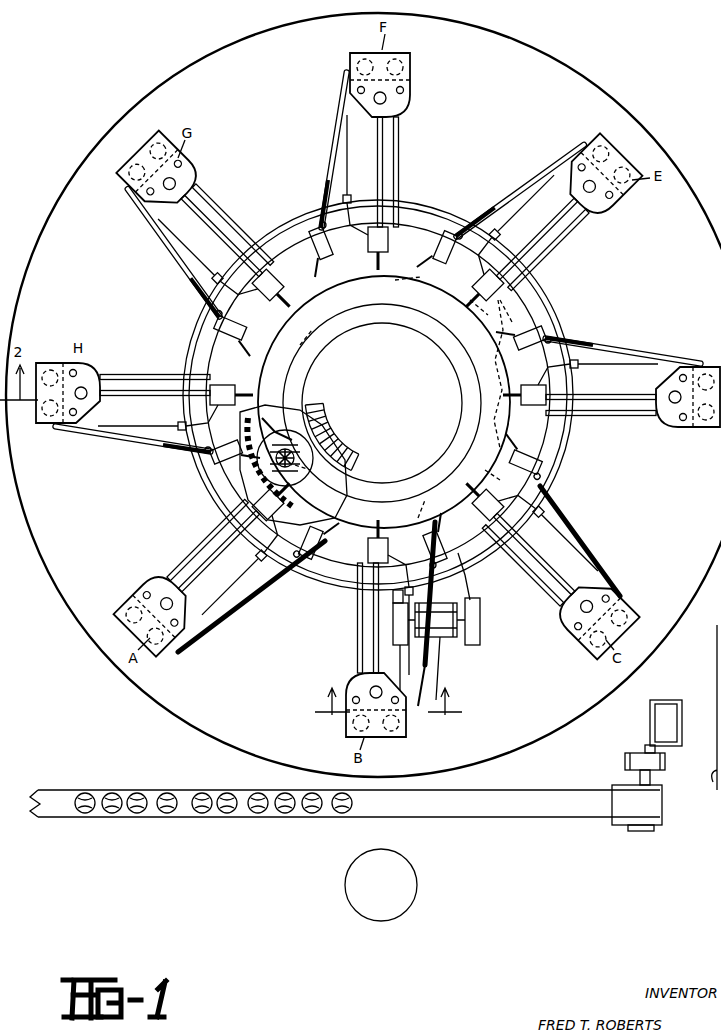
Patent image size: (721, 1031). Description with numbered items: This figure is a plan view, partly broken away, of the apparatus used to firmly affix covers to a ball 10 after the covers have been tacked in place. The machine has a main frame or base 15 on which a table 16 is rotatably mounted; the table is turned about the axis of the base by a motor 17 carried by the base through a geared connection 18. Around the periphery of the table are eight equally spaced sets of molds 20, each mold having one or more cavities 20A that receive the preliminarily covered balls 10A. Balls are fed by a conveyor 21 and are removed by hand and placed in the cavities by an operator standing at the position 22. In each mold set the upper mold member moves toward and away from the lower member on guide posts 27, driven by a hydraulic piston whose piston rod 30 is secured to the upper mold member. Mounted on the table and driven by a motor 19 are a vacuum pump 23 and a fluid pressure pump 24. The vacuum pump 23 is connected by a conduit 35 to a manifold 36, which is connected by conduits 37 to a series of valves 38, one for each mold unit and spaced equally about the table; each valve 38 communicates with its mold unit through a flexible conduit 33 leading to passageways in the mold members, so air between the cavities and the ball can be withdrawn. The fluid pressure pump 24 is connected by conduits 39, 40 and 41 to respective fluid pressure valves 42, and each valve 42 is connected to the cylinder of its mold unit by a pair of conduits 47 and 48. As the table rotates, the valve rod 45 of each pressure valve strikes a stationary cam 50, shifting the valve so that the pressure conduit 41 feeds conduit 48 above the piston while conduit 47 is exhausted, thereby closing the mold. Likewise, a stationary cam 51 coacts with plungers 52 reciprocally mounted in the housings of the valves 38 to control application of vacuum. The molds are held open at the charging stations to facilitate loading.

The ball 10 is at (345, 748).
The preliminarily covered ball 10A is at (335, 845).
The main frame or base 15 is at (345, 445).
The table 16 is at (363, 395).
The motor 17 is at (320, 425).
The geared connection 18 is at (300, 480).
The motor 19 is at (450, 668).
The set of molds 20 is at (412, 75).
The mold cavity 20A is at (378, 408).
The conveyor 21 is at (585, 790).
The operator position 22 is at (405, 868).
The vacuum pump 23 is at (481, 612).
The fluid pressure pump 24 is at (428, 646).
The post 27 is at (404, 92).
The piston rod 30 is at (386, 99).
The flexible conduit 33 is at (330, 146).
The conduit 35 is at (476, 572).
The manifold 36 is at (587, 462).
The conduit 37 is at (378, 395).
The valve 38 is at (528, 438).
The conduit 39 is at (406, 586).
The conduit 40 is at (580, 483).
The pressure conduit 41 is at (378, 395).
The fluid pressure valve 42 is at (410, 395).
The valve rod 45 is at (384, 402).
The conduit 47 is at (398, 150).
The conduit 48 is at (377, 154).
The stationary cam 50 is at (508, 364).
The stationary cam 51 is at (510, 311).
The plunger 52 is at (392, 397).